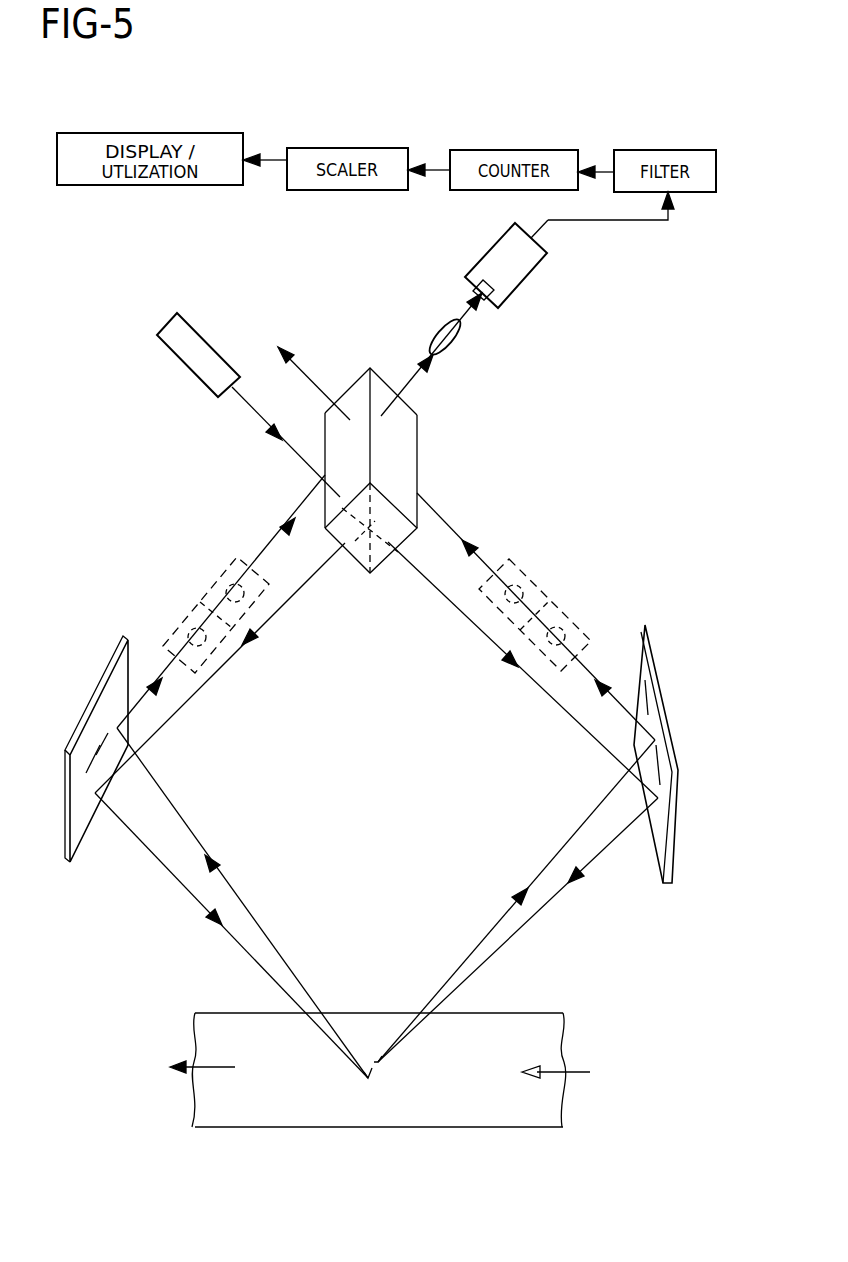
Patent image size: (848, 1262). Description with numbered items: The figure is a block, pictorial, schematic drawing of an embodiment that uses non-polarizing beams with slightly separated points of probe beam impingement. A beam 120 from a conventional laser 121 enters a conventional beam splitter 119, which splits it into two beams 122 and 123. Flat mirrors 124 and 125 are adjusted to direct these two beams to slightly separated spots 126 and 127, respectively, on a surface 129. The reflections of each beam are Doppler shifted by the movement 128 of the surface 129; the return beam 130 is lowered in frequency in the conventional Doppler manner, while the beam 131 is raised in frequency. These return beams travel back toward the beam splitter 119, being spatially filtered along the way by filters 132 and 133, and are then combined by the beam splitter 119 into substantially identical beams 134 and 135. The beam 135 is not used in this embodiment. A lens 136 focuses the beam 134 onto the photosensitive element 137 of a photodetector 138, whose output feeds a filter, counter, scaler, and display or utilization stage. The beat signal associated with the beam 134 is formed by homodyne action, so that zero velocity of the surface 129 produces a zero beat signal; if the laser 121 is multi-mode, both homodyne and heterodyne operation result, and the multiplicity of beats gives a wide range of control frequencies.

The beam splitter 119 is at (418, 452).
The beam 120 is at (292, 449).
The laser 121 is at (199, 333).
The beam 122 is at (546, 706).
The beam 123 is at (214, 682).
The flat mirror 124 is at (680, 832).
The flat mirror 125 is at (90, 708).
The spot 126 is at (392, 1054).
The spot 127 is at (356, 1078).
The movement 128 is at (578, 1072).
The surface 129 is at (553, 1116).
The return beam 130 is at (584, 820).
The beam 131 is at (272, 942).
The filter 132 is at (545, 592).
The filter 133 is at (216, 585).
The beam 134 is at (438, 372).
The beam 135 is at (312, 378).
The lens 136 is at (438, 324).
The photosensitive element 137 is at (486, 302).
The photodetector 138 is at (490, 246).